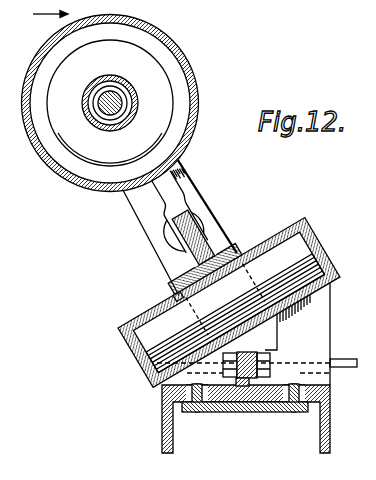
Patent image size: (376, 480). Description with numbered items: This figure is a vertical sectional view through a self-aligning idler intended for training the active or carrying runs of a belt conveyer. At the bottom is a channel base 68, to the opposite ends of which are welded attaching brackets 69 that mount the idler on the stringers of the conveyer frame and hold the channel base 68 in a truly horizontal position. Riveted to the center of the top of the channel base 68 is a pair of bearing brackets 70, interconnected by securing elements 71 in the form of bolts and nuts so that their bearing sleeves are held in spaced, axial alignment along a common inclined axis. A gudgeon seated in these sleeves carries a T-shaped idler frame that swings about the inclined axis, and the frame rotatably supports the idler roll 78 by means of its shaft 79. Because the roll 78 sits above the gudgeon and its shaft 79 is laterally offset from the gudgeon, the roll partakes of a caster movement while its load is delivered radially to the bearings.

The channel base 68 is at (330, 416).
The attaching brackets 69 is at (243, 413).
The bearing brackets 70 is at (330, 346).
The securing elements 71 is at (270, 358).
The idler roll 78 is at (197, 121).
The shaft 79 is at (112, 97).